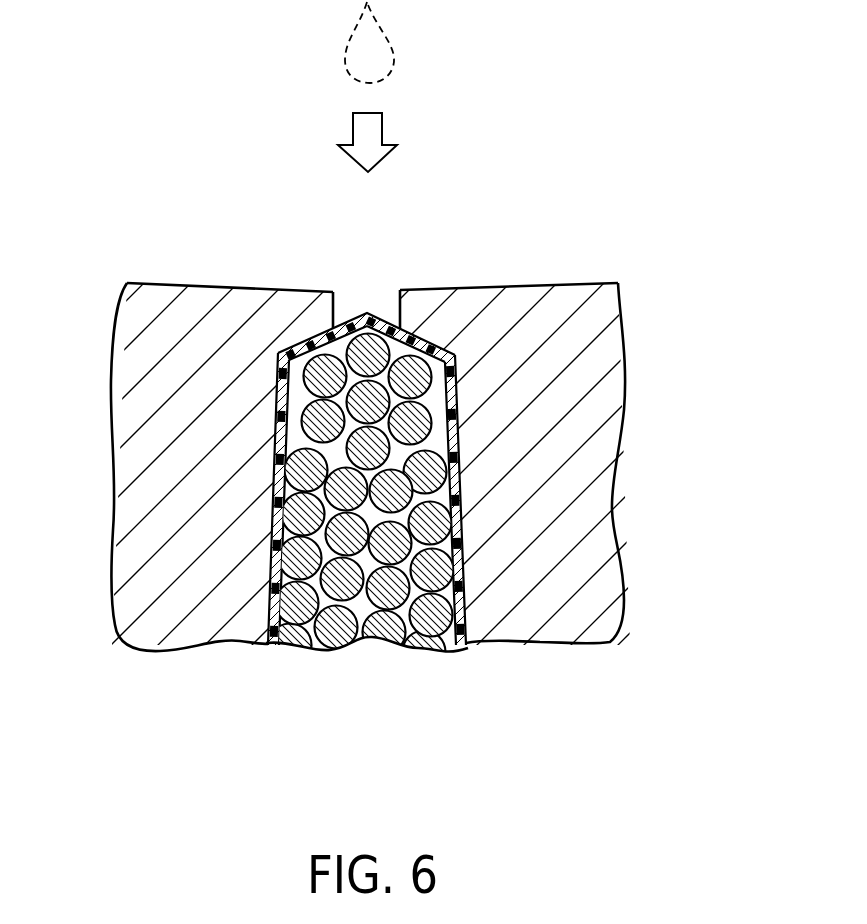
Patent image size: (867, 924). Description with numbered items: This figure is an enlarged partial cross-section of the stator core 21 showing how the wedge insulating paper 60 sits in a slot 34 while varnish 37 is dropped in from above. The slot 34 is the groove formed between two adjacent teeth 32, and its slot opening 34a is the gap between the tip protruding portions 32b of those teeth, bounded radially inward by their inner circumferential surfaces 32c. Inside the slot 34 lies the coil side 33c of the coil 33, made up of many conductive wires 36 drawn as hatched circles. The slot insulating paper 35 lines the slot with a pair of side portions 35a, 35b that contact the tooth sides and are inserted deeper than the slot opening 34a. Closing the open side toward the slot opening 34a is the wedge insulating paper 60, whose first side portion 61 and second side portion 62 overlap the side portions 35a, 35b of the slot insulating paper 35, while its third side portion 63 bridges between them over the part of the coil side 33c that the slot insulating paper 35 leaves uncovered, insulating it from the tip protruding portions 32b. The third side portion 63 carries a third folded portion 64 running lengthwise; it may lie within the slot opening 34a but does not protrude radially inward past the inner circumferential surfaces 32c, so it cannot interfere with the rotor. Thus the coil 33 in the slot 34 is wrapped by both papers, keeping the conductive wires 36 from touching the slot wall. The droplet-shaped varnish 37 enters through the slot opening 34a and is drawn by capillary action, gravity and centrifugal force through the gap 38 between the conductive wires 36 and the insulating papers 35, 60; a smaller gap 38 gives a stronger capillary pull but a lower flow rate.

The stator core 21 is at (433, 415).
The tooth 32 is at (433, 415).
The tip protruding portion 32b is at (402, 300).
The inner circumferential surface 32c is at (143, 283).
The coil 33 is at (313, 650).
The coil side 33c is at (353, 612).
The slot 34 is at (264, 481).
The slot opening 34a is at (376, 302).
The slot insulating paper 35 is at (430, 471).
The side portion 35a is at (470, 640).
The side portion 35b is at (240, 636).
The conductive wire 36 is at (383, 597).
The varnish 37 is at (390, 44).
The gap 38 is at (445, 406).
The wedge insulating paper 60 is at (383, 265).
The first side portion 61 is at (449, 405).
The second side portion 62 is at (292, 400).
The third side portion 63 is at (425, 332).
The third folded portion 64 is at (361, 312).